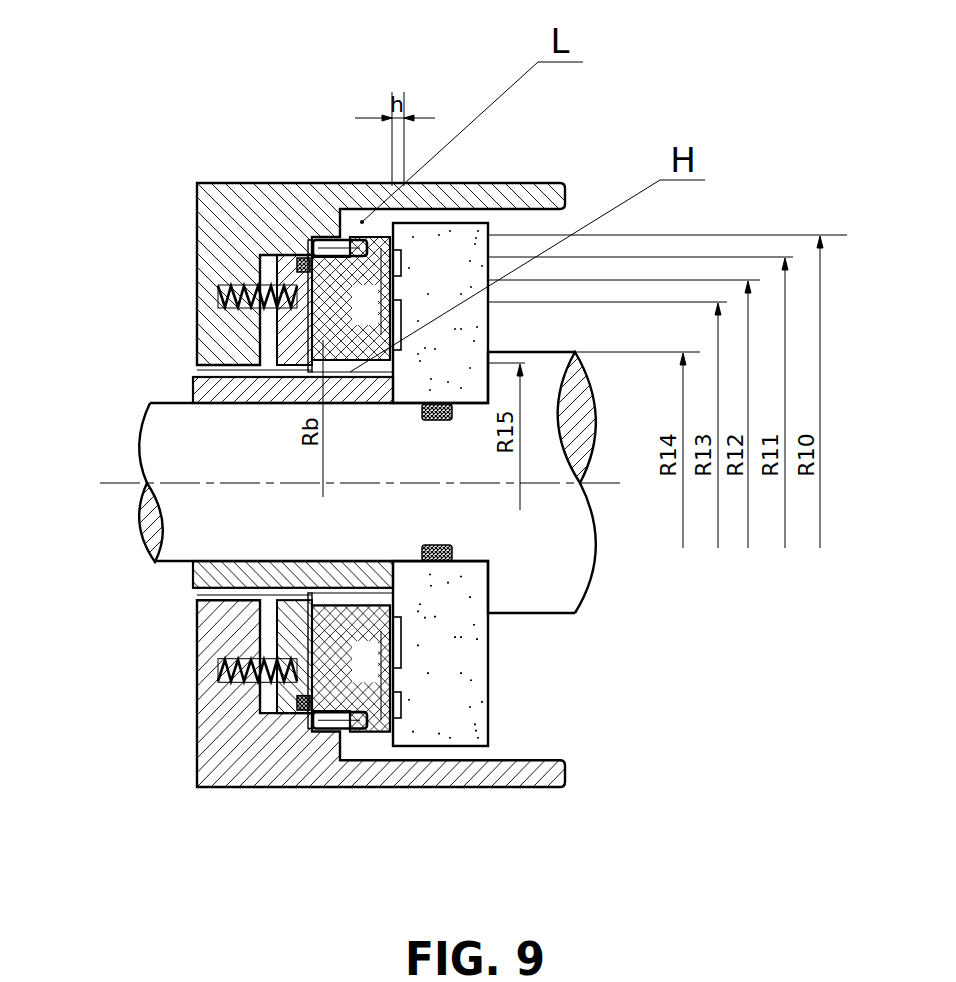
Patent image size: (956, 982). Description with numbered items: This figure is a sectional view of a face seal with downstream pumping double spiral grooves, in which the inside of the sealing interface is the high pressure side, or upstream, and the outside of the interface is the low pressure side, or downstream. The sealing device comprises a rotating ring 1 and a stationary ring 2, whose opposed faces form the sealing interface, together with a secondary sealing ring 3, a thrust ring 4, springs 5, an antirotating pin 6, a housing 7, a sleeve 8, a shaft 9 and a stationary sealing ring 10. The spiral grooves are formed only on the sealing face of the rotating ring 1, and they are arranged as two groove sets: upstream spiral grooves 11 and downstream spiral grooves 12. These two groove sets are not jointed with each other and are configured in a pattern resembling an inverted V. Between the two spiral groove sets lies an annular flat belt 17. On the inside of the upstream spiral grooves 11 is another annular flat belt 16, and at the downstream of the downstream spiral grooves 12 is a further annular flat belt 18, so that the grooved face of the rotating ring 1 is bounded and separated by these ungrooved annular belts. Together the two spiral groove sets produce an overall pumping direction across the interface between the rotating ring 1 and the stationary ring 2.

The rotating ring 1 is at (465, 283).
The stationary ring 2 is at (373, 270).
The secondary sealing ring 3 is at (303, 242).
The thrust ring 4 is at (281, 255).
The springs 5 is at (227, 283).
The antirotating pin 6 is at (313, 243).
The housing 7 is at (215, 350).
The sleeve 8 is at (228, 386).
The shaft 9 is at (240, 498).
The stationary sealing ring 10 is at (213, 630).
The upstream spiral grooves 11 is at (317, 720).
The downstream spiral grooves 12 is at (380, 727).
The annular flat belt 16 is at (395, 610).
The annular flat belt 17 is at (405, 618).
The annular flat belt 18 is at (395, 683).